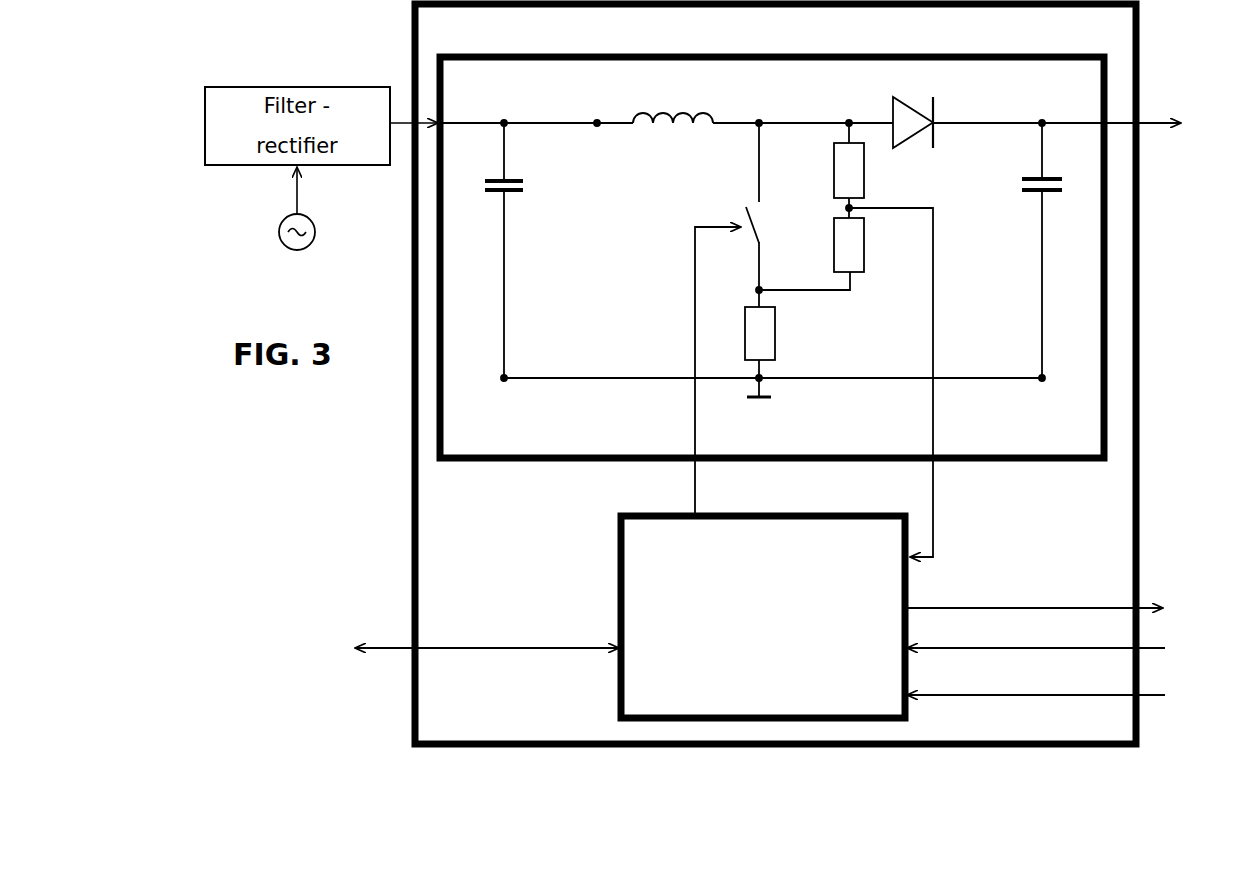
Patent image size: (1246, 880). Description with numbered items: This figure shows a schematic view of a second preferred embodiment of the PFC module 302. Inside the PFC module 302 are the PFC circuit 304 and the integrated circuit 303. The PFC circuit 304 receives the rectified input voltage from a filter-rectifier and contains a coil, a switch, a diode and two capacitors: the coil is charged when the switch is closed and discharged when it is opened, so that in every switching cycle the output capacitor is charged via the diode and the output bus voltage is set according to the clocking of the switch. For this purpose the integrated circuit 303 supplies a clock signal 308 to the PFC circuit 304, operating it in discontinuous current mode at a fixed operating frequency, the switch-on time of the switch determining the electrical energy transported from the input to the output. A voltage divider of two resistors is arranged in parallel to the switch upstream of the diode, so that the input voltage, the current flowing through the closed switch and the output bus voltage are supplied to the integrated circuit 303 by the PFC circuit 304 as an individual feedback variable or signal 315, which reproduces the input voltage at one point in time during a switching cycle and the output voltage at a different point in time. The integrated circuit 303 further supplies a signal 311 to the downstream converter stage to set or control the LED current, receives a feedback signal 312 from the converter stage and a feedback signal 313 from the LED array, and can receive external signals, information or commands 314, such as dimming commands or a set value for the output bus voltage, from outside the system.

The PFC module 302 is at (775, 374).
The integrated circuit 303 is at (763, 617).
The PFC circuit 304 is at (810, 257).
The clock signal 308 is at (694, 371).
The signal 311 is at (1034, 595).
The feedback variable / signal 312 is at (1036, 635).
The feedback variable / signal 313 is at (1036, 683).
The signals, information or commands 314 is at (487, 667).
The feedback variable / signal 315 is at (956, 382).